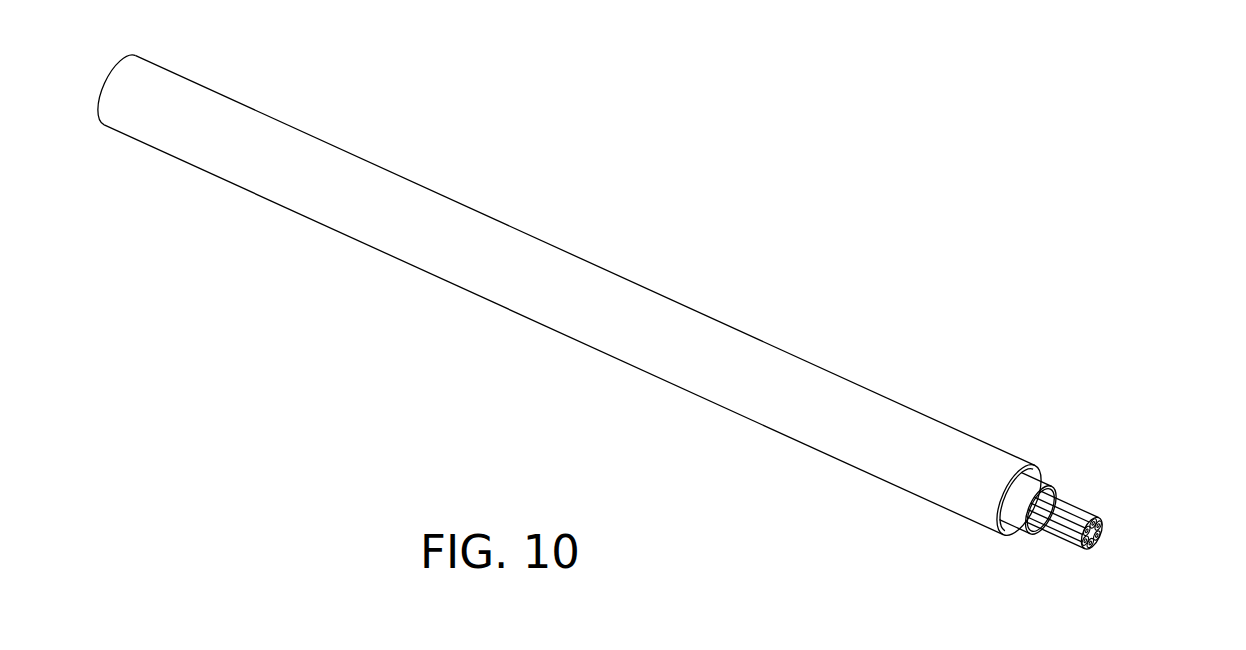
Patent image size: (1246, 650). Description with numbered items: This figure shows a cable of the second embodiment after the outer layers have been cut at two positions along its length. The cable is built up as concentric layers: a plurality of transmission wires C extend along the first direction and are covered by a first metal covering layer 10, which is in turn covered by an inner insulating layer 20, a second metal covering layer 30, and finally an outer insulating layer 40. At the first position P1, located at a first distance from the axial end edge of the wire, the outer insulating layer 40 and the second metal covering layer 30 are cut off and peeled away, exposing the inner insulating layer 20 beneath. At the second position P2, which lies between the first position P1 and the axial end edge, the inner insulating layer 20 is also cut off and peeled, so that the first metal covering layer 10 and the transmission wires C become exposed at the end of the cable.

The first metal covering layer 10 is at (1040, 531).
The inner insulating layer 20 is at (1016, 518).
The second metal covering layer 30 is at (1042, 483).
The outer insulating layer 40 is at (1037, 465).
The first position P1 is at (1039, 467).
The second position P2 is at (1076, 500).
The transmission wires C is at (1096, 541).